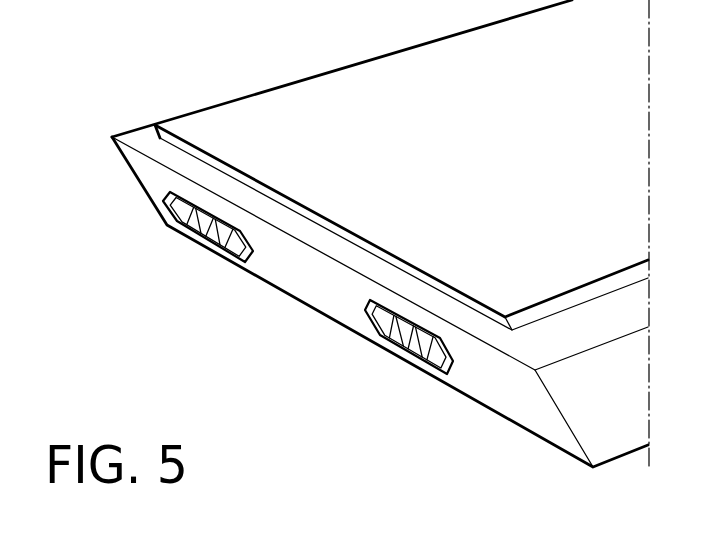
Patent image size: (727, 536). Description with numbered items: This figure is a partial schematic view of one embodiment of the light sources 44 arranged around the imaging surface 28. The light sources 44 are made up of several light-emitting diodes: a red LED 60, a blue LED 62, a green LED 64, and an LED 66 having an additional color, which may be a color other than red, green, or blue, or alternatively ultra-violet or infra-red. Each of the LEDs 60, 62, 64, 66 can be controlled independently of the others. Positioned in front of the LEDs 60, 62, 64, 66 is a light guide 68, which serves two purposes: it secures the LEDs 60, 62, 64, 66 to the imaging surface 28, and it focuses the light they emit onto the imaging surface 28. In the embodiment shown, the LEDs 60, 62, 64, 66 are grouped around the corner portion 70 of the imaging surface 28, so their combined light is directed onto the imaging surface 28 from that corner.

The imaging surface 28 is at (508, 221).
The light sources 44 is at (112, 316).
The red LED 60 is at (157, 249).
The blue LED 62 is at (190, 247).
The green LED 64 is at (213, 247).
The LED having an additional color 66 is at (233, 248).
The light guide 68 is at (168, 191).
The corner portion 70 is at (155, 127).